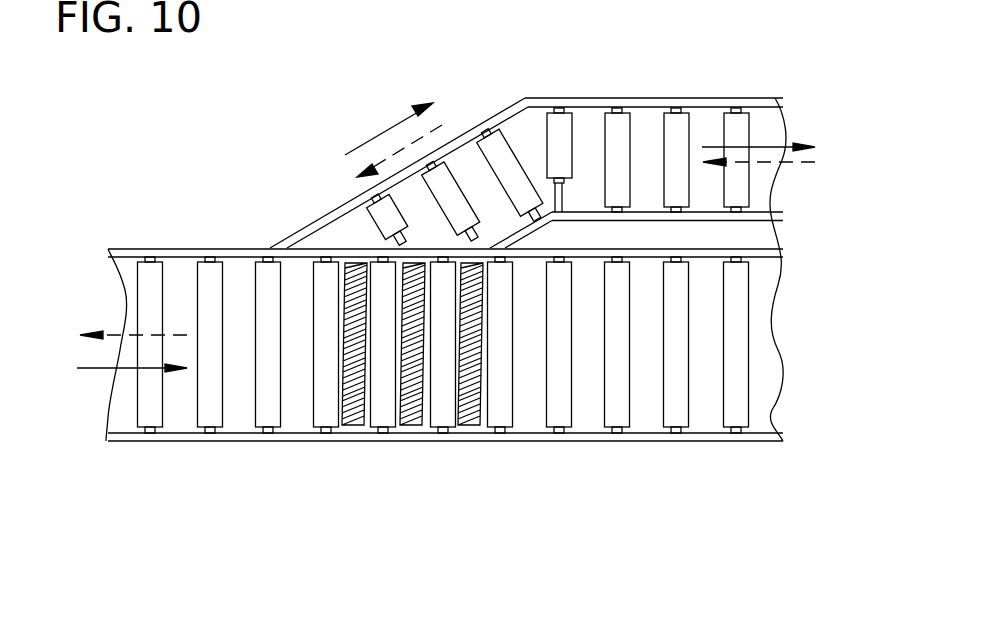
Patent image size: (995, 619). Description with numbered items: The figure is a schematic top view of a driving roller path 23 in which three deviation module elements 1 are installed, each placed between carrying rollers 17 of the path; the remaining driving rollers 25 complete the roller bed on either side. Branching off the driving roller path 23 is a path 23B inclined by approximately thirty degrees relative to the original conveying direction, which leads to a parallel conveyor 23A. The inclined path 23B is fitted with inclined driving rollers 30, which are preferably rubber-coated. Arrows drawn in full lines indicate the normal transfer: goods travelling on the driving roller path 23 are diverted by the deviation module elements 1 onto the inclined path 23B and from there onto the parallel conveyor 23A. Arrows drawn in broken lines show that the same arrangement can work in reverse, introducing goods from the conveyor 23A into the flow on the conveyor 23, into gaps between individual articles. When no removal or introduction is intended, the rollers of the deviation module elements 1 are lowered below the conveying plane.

The deviation module element 1 is at (470, 415).
The carrying roller 17 is at (325, 398).
The driving roller path 23 is at (431, 311).
The parallel conveyor 23A is at (700, 105).
The inclined path 23B is at (390, 135).
The driving roller 25 is at (208, 292).
The inclined driving roller 30 is at (447, 203).